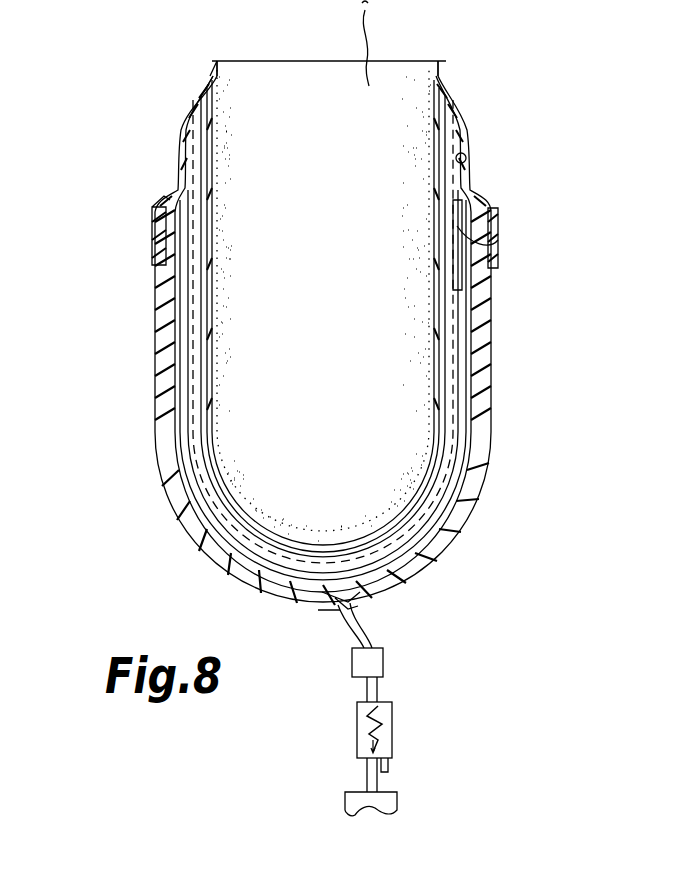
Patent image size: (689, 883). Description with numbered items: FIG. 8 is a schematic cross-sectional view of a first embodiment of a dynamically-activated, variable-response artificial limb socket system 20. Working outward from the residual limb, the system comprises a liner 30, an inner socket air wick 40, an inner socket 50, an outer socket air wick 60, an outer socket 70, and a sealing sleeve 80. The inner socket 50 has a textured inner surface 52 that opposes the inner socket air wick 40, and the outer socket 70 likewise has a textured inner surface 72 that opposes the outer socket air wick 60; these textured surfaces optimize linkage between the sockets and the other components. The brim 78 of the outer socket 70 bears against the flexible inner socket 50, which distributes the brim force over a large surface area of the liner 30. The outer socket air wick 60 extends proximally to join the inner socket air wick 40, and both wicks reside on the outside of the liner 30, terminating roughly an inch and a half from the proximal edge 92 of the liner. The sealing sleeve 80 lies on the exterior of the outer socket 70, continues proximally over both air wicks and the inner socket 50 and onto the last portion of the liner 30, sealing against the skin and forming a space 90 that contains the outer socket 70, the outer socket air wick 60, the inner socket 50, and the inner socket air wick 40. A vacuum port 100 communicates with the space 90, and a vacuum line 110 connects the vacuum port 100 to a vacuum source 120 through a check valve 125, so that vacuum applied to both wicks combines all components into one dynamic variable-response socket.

The artificial limb socket system 20 is at (150, 118).
The liner 30 is at (219, 136).
The inner socket air wick 40 is at (462, 128).
The inner socket 50 is at (470, 256).
The textured inner surface 52 is at (205, 278).
The outer socket air wick 60 is at (467, 326).
The outer socket 70 is at (491, 413).
The textured inner surface 72 is at (178, 312).
The brim 78 is at (457, 224).
The sealing sleeve 80 is at (440, 82).
The space 90 is at (466, 158).
The proximal edge 92 is at (215, 95).
The vacuum port 100 is at (372, 598).
The vacuum line 110 is at (370, 633).
The vacuum source 120 is at (393, 720).
The check valve 125 is at (384, 665).